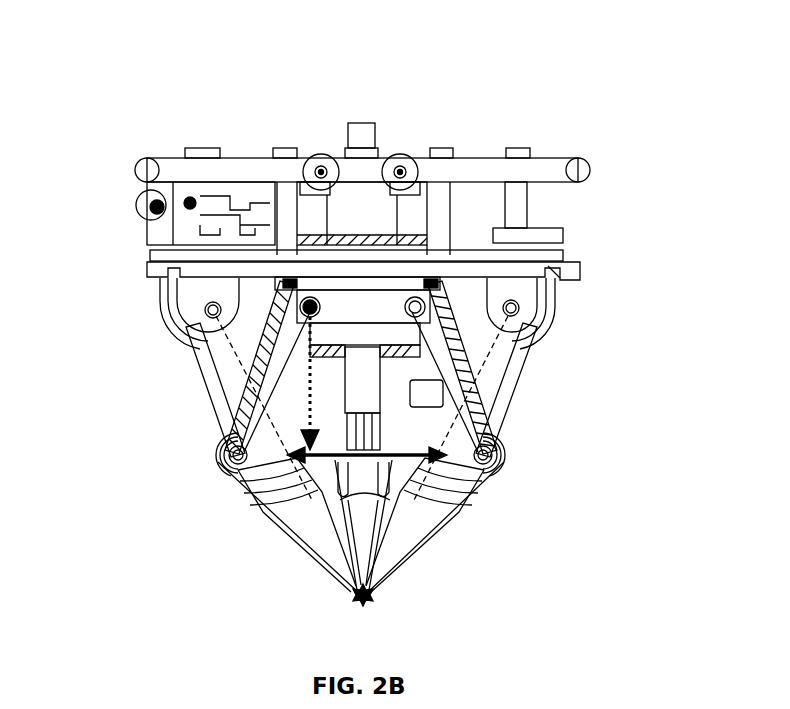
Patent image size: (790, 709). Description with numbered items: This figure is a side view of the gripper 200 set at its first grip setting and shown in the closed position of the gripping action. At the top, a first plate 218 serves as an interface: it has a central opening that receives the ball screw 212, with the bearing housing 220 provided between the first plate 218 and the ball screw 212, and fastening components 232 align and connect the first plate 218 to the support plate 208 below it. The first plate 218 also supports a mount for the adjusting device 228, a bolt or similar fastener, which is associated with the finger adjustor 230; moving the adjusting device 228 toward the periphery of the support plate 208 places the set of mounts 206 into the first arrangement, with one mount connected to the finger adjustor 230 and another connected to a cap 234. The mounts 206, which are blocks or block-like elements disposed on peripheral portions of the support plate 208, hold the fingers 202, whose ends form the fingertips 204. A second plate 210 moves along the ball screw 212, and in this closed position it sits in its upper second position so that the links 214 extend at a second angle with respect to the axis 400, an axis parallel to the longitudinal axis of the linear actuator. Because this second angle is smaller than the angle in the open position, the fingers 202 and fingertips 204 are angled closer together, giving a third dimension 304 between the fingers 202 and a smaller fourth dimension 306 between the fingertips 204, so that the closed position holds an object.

The gripper 200 is at (500, 106).
The fingers 202 is at (200, 348).
The fingertips 204 is at (497, 578).
The mounts 206 is at (153, 333).
The support plate 208 is at (580, 272).
The second plate 210 is at (379, 321).
The ball screw 212 is at (360, 137).
The links 214 is at (250, 420).
The first plate 218 is at (537, 171).
The bearing housing 220 is at (379, 222).
The adjusting device 228 is at (136, 203).
The finger adjustor 230 is at (162, 232).
The fastening components 232 is at (513, 207).
The cap 234 is at (540, 235).
The third dimension 304 is at (397, 453).
The fourth dimension 306 is at (368, 600).
The axis 400 is at (312, 406).